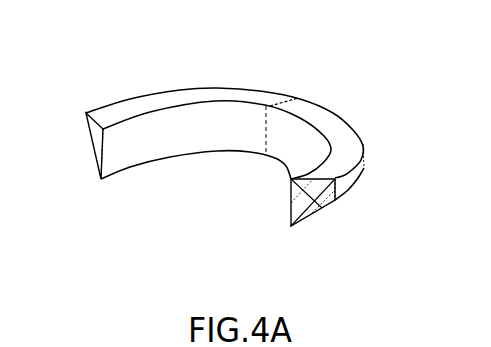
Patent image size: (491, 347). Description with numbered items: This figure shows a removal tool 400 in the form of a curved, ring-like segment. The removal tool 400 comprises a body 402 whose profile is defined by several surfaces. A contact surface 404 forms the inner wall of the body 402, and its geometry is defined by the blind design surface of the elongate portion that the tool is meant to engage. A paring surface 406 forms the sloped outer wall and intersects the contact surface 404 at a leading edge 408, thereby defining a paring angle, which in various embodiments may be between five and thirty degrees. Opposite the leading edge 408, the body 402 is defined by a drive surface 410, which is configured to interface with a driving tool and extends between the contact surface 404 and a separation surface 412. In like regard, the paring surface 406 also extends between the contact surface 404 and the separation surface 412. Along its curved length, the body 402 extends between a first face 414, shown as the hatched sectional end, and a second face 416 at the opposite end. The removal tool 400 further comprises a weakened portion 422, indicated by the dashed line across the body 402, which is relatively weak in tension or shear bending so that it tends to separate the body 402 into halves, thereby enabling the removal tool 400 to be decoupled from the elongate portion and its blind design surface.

The removal tool 400 is at (242, 143).
The body 402 is at (242, 161).
The contact surface 404 is at (177, 138).
The paring surface 406 is at (92, 150).
The leading edge 408 is at (291, 227).
The drive surface 410 is at (340, 127).
The separation surface 412 is at (357, 172).
The first face 414 is at (306, 206).
The second face 416 is at (97, 139).
The weakened portion 422 is at (290, 81).